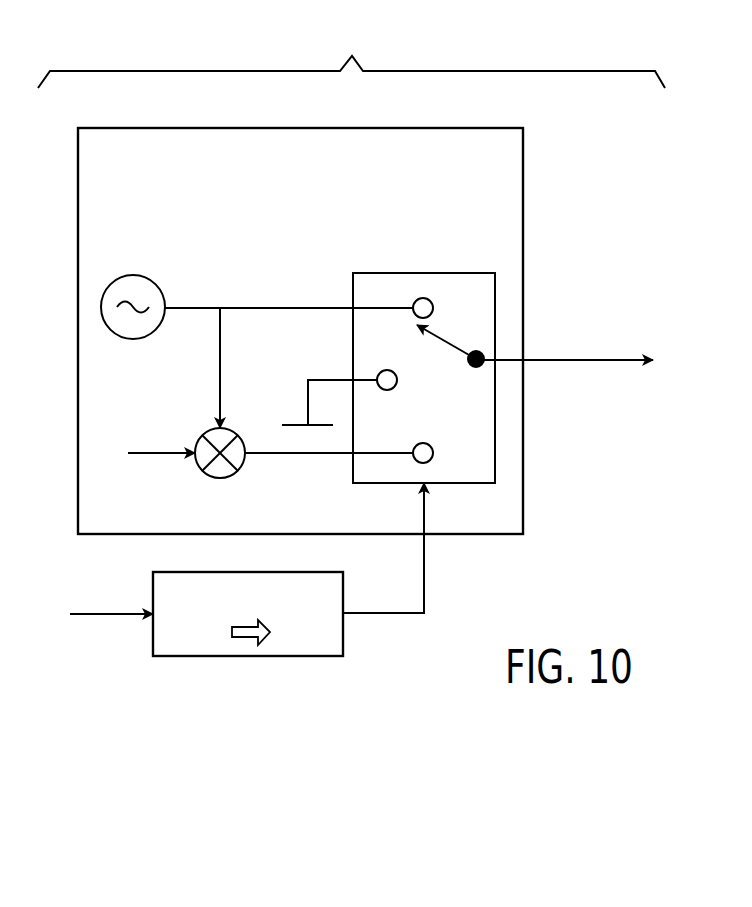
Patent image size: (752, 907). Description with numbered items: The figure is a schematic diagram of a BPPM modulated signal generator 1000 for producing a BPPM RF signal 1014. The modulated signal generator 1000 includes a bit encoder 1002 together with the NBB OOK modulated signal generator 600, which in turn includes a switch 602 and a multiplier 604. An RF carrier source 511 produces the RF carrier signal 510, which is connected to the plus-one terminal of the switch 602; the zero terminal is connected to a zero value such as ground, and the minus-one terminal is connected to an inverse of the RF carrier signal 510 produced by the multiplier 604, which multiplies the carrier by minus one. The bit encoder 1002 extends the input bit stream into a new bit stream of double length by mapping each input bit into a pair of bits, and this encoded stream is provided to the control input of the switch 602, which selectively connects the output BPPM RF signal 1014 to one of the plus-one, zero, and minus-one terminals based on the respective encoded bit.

The BPPM modulated signal generator 1000 is at (351, 58).
The NBB OOK modulated signal generator 600 is at (175, 128).
The RF carrier source 511 is at (155, 332).
The RF carrier signal 510 is at (289, 275).
The multiplier 604 is at (220, 478).
The switch 602 is at (476, 273).
The BPPM RF signal 1014 is at (572, 362).
The bit encoder 1002 is at (248, 656).